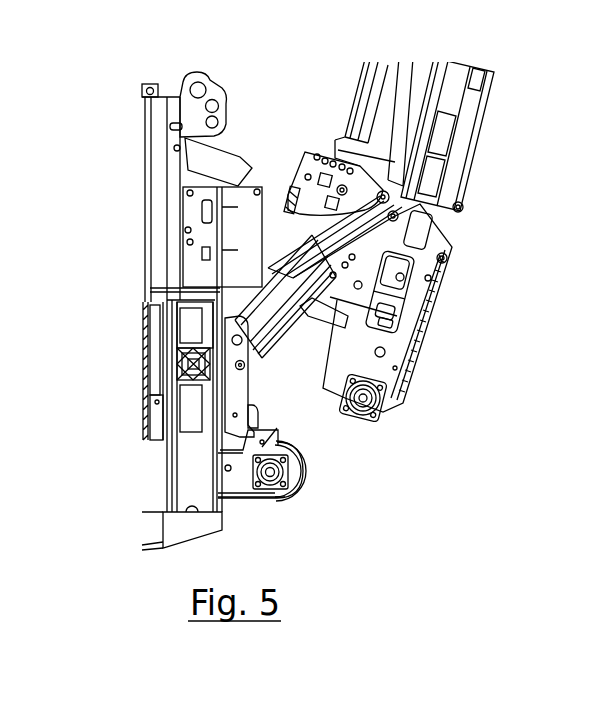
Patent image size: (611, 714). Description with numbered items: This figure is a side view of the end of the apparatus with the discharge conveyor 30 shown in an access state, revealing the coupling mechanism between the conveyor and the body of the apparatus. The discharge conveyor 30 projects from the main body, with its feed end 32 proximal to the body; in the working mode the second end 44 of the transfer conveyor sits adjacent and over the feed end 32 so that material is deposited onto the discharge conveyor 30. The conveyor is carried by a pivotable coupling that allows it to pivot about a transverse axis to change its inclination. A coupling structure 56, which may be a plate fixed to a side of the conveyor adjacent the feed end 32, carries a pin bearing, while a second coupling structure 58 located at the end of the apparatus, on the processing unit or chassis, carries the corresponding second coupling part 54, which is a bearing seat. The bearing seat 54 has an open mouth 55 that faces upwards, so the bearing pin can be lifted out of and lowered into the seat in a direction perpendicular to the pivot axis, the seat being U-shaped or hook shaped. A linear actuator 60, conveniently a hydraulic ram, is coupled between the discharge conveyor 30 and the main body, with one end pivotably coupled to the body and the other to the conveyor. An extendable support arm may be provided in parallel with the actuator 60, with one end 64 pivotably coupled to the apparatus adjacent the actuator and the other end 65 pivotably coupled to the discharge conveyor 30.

The discharge conveyor 30 is at (480, 122).
The feed end 32 is at (380, 410).
The second end of the transfer conveyor 44 is at (272, 498).
The second coupling part 54 is at (262, 447).
The open mouth 55 is at (255, 406).
The coupling structure 56 is at (278, 217).
The second coupling structure 58 is at (230, 399).
The linear actuator 60 is at (280, 297).
The end of support arm 64 is at (236, 366).
The other end of support arm 65 is at (389, 196).